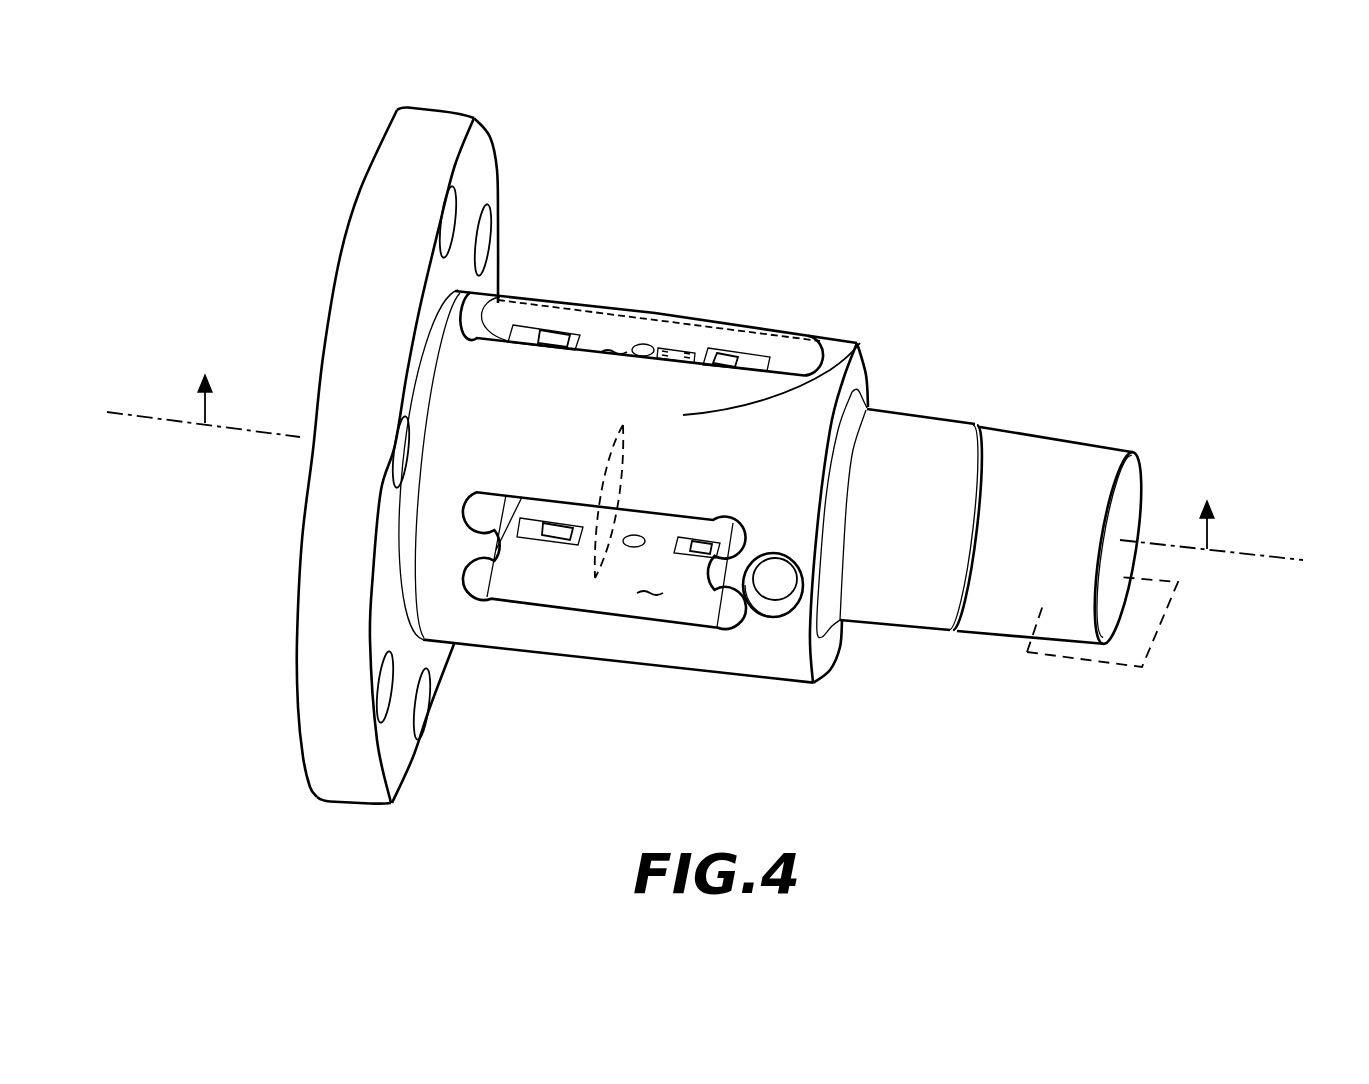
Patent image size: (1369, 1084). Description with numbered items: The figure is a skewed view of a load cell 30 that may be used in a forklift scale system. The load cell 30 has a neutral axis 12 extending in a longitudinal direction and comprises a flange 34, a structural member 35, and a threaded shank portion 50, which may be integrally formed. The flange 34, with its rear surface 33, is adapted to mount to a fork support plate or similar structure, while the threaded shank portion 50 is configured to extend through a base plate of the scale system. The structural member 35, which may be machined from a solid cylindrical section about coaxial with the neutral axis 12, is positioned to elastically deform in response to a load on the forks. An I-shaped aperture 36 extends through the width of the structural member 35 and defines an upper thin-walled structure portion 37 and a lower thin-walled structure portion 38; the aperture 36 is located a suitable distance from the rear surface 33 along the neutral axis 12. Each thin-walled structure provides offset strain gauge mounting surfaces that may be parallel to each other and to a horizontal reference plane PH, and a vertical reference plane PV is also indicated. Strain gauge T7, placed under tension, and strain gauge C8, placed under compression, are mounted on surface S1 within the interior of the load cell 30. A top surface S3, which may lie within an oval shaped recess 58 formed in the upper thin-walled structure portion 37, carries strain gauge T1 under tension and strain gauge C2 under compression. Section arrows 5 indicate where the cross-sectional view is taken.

The load cell 30 is at (1140, 236).
The rear surface 33 is at (339, 291).
The flange 34 is at (372, 197).
The structural member 35 is at (837, 340).
The aperture 36 is at (692, 608).
The upper thin-walled structure portion 37 is at (850, 360).
The lower thin-walled structure portion 38 is at (583, 630).
The threaded shank portion 50 is at (1077, 456).
The oval shaped recess 58 is at (683, 322).
The neutral axis 12 is at (157, 419).
The arrows 5- 5 is at (708, 450).
The strain gauge T1 is at (558, 337).
The strain gauge T7 is at (557, 530).
The strain gauge C2 is at (730, 358).
The strain gauge C8 is at (700, 547).
The strain gauge mounting surface S1 is at (604, 560).
The top surface S3 is at (641, 334).
The vertical reference plane PV is at (610, 454).
The horizontal reference plane PH is at (1162, 640).